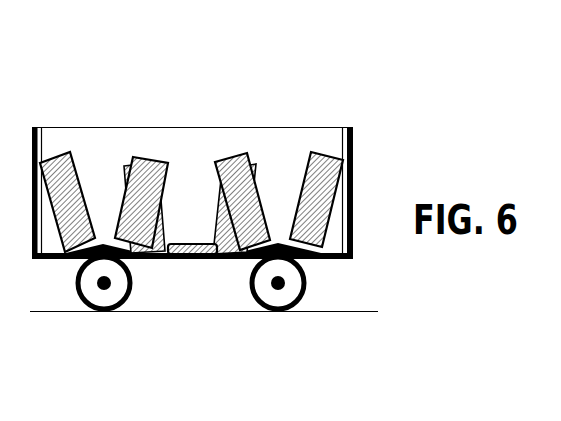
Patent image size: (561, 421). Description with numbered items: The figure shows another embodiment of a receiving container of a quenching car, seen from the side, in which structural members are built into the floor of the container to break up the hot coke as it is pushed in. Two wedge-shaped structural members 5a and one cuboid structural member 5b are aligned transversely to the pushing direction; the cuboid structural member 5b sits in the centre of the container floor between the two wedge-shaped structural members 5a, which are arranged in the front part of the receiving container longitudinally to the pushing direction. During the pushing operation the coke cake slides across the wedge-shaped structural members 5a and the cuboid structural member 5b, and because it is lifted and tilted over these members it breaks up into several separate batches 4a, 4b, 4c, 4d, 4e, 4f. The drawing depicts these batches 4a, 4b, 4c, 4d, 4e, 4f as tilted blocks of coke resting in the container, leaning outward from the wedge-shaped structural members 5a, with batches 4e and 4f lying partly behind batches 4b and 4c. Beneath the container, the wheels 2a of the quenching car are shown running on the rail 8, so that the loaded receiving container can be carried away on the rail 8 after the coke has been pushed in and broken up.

The coke batch 4a is at (66, 140).
The coke batch 4b is at (157, 153).
The coke batch 4c is at (238, 152).
The coke batch 4d is at (332, 152).
The coke batch 4e is at (128, 165).
The coke batch 4f is at (258, 165).
The wedge-shaped structural member 5a is at (325, 260).
The cuboid structural member 5b is at (178, 258).
The wheels 2a is at (253, 298).
The rail 8 is at (63, 312).